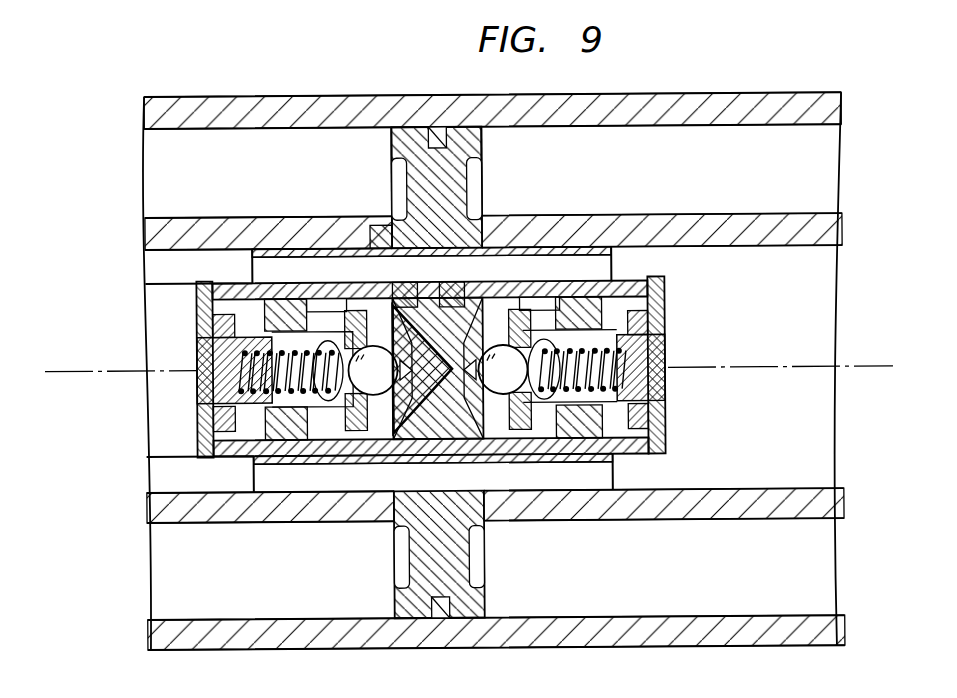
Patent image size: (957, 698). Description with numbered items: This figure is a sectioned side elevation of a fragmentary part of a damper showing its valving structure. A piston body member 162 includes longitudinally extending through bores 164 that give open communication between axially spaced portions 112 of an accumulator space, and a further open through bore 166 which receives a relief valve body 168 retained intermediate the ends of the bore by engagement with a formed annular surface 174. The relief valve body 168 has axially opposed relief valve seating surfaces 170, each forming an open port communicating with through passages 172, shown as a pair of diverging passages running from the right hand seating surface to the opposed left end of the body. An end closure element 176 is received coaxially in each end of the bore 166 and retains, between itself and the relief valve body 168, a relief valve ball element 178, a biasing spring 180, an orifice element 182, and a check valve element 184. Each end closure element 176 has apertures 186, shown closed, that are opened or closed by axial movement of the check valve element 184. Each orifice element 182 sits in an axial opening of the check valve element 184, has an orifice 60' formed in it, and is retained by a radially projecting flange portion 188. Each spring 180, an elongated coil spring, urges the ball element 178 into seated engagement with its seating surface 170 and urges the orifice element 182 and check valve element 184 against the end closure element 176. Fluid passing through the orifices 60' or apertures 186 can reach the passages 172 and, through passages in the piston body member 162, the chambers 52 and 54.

The chamber 52 is at (204, 167).
The chamber 54 is at (811, 166).
The axially spaced portions of accumulator space 112 is at (238, 286).
The piston body member 162 is at (455, 232).
The through bores 164 is at (585, 268).
The open through bore 166 is at (331, 304).
The relief valve body 168 is at (437, 315).
The relief valve seating surfaces 170 is at (450, 396).
The through passages 172 is at (406, 310).
The formed annular surface 174 is at (471, 418).
The end closure element 176 is at (197, 292).
The relief valve ball element 178 is at (375, 380).
The biasing spring 180 is at (283, 400).
The orifice element 182 is at (197, 386).
The check valve element 184 is at (284, 330).
The apertures 186 is at (207, 325).
The radially projecting flange portion 188 is at (208, 418).
The orifice 60' is at (466, 360).